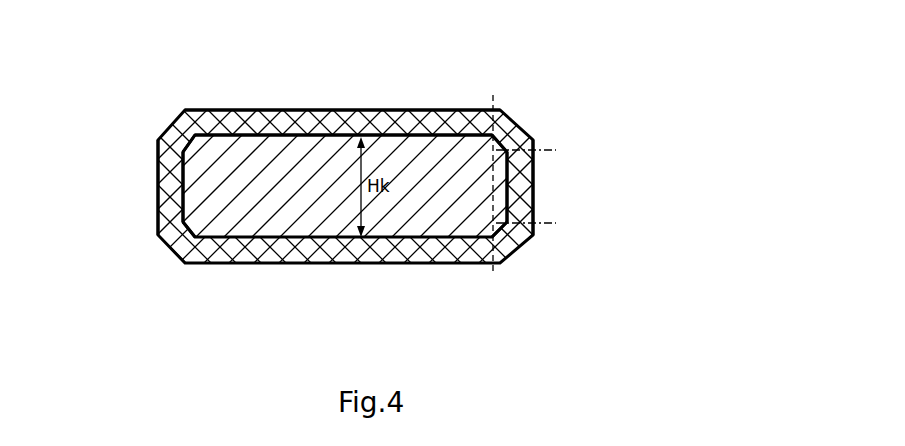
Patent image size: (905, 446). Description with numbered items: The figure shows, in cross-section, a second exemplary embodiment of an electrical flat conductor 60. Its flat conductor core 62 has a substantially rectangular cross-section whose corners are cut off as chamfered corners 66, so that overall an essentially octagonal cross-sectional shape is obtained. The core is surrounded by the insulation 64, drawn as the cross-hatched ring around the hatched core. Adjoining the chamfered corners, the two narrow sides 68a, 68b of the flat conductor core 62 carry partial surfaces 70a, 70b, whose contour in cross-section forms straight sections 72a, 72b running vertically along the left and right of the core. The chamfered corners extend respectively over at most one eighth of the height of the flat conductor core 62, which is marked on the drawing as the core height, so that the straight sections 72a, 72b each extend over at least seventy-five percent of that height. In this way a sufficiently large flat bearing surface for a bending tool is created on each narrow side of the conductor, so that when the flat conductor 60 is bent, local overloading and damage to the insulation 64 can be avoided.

The flat conductor 60 is at (554, 70).
The flat conductor core 62 is at (428, 160).
The insulation 64 is at (373, 123).
The chamfered corners 66 is at (516, 250).
The narrow side 68a is at (510, 211).
The narrow side 68b is at (180, 213).
The partial surface 70a is at (518, 195).
The partial surface 70b is at (170, 195).
The straight section 72a is at (512, 156).
The straight section 72b is at (180, 168).